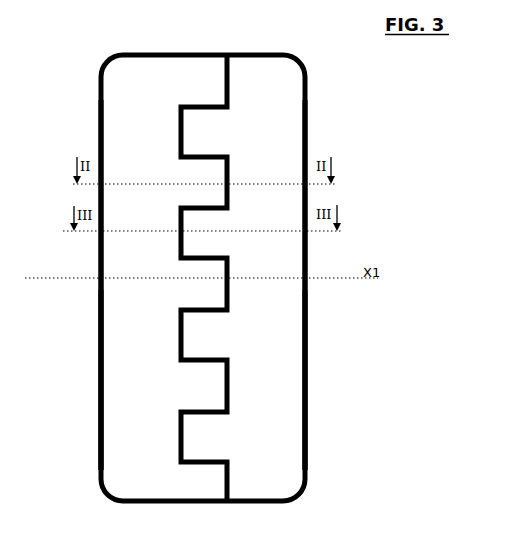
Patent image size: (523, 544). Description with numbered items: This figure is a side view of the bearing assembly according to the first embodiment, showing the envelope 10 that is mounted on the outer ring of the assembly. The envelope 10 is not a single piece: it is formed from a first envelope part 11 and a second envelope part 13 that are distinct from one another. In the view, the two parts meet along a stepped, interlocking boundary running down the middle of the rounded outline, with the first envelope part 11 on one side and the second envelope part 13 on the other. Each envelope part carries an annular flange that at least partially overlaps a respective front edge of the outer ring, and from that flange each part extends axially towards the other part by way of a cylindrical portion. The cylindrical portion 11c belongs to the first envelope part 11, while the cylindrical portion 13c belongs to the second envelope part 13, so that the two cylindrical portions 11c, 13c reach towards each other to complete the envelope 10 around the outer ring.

The envelope 10 is at (353, 126).
The first envelope part 11 is at (298, 101).
The cylindrical portion 11c is at (298, 330).
The second envelope part 13 is at (108, 90).
The cylindrical portion 13c is at (108, 332).